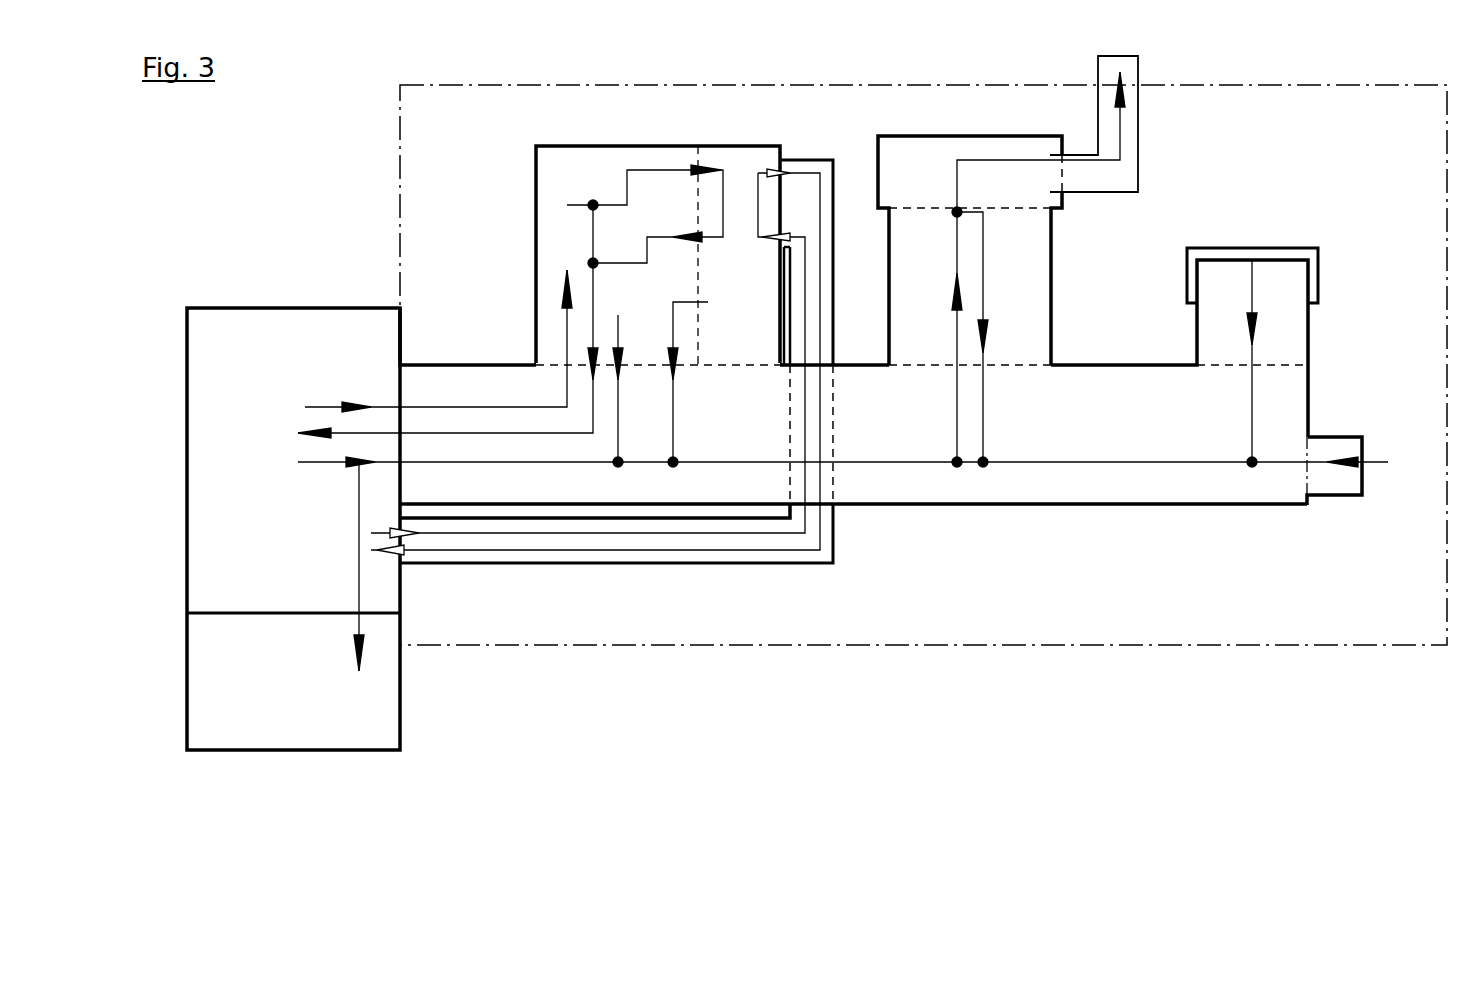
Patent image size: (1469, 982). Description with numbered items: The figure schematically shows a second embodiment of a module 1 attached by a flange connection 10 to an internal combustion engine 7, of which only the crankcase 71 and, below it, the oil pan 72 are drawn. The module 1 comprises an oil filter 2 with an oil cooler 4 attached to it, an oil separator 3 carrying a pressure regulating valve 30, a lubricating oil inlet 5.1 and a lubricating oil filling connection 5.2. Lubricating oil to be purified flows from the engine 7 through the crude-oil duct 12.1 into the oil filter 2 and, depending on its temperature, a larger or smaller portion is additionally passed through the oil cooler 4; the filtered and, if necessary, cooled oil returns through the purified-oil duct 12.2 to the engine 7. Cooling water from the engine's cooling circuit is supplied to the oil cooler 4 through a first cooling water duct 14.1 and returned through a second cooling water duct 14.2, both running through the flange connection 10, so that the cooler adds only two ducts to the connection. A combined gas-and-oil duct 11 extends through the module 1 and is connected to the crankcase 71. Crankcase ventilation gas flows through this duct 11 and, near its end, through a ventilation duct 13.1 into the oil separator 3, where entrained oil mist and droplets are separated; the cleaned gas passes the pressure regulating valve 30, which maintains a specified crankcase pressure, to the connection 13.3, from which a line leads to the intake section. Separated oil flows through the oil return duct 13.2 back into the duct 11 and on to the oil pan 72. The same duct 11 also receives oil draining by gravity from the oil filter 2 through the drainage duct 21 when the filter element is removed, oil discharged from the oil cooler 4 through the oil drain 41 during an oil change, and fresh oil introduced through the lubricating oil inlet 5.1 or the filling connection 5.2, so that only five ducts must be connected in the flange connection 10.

The module 1 is at (400, 200).
The oil filter 2 is at (645, 216).
The oil separator 3 is at (963, 235).
The oil cooler 4 is at (723, 255).
The lubricating oil inlet 5.1 is at (1277, 332).
The lubricating oil filling connection 5.2 is at (1337, 450).
The internal combustion engine 7 is at (187, 493).
The flange connection 10 is at (402, 565).
The combined gas-and-oil duct 11 is at (1055, 464).
The crude-oil duct 12.1 is at (462, 407).
The purified-oil duct 12.2 is at (505, 437).
The ventilation duct 13.1 is at (957, 405).
The oil return duct 13.2 is at (985, 385).
The connection 13.3 is at (1120, 137).
The first cooling water duct 14.1 is at (833, 565).
The second cooling water duct 14.2 is at (835, 533).
The drainage duct 21 is at (620, 403).
The pressure regulating valve 30 is at (970, 250).
The oil drain 41 is at (708, 302).
The crankcase 71 is at (787, 529).
The oil pan 72 is at (303, 579).